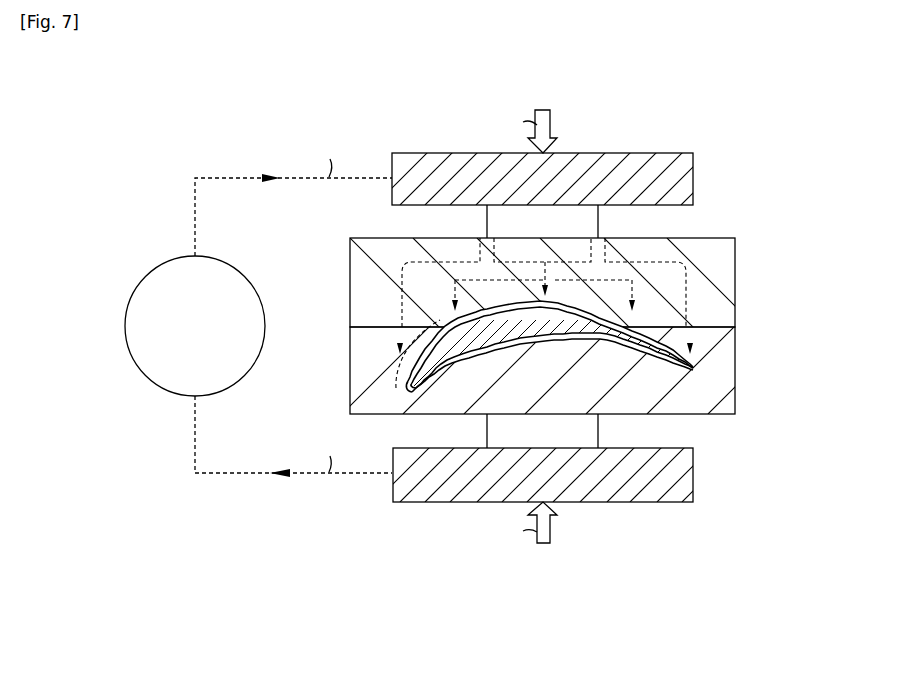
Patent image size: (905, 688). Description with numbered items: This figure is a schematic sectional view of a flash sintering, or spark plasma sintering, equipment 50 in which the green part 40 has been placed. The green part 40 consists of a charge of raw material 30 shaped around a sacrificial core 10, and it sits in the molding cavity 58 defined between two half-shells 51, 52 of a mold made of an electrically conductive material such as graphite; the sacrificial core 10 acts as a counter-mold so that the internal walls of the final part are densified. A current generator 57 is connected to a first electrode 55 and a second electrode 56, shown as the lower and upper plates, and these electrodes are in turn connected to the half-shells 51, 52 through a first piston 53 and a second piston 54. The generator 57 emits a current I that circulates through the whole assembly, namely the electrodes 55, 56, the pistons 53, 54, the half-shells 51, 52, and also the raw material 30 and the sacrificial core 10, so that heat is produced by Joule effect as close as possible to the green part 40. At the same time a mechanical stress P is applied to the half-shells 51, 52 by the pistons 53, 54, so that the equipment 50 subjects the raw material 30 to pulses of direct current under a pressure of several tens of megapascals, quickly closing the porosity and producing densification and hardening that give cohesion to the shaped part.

The flash sintering equipment 50 is at (717, 120).
The second electrode 56 is at (694, 178).
The second piston 54 is at (585, 218).
The half-shell 52 is at (727, 283).
The half-shell 51 is at (727, 368).
The mold cavity 58 is at (397, 382).
The green part 40 is at (559, 354).
The raw material 30 is at (642, 357).
The sacrificial core 10 is at (600, 383).
The first piston 53 is at (496, 434).
The first electrode 55 is at (694, 473).
The current generator 57 is at (186, 337).